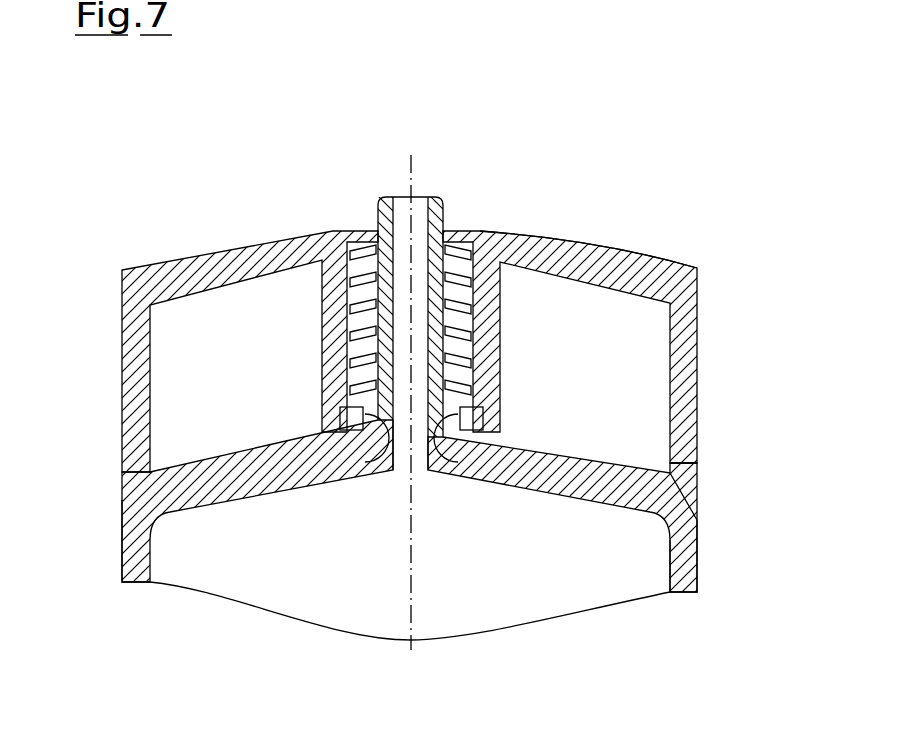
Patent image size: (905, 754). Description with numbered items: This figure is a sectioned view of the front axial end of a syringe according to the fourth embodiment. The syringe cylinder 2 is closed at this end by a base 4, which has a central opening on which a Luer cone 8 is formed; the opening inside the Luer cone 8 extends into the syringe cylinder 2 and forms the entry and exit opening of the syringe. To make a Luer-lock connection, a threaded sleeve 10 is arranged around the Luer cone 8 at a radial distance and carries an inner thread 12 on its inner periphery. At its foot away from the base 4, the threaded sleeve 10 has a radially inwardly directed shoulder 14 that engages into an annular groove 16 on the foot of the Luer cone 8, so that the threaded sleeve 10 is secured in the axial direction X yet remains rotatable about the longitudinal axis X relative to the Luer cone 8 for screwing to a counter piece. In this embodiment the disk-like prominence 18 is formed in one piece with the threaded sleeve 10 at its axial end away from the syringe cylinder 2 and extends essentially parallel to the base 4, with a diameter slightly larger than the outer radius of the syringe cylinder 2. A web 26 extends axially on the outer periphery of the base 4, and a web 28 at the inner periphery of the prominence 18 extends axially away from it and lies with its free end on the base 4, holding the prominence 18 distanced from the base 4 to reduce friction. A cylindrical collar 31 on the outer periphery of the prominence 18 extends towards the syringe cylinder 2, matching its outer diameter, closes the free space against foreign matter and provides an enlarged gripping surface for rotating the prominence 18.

The longitudinal axis X is at (413, 177).
The syringe cylinder 2 is at (698, 562).
The base 4 is at (580, 470).
The Luer cone 8 is at (447, 213).
The threaded sleeve 10 is at (473, 320).
The inner thread 12 is at (350, 313).
The radially inwardly directed shoulder 14 is at (463, 398).
The annular groove 16 is at (364, 466).
The disk-like prominence 18 is at (587, 257).
The web 26 is at (697, 483).
The web 28 is at (493, 440).
The cylindrical collar 31 is at (683, 347).